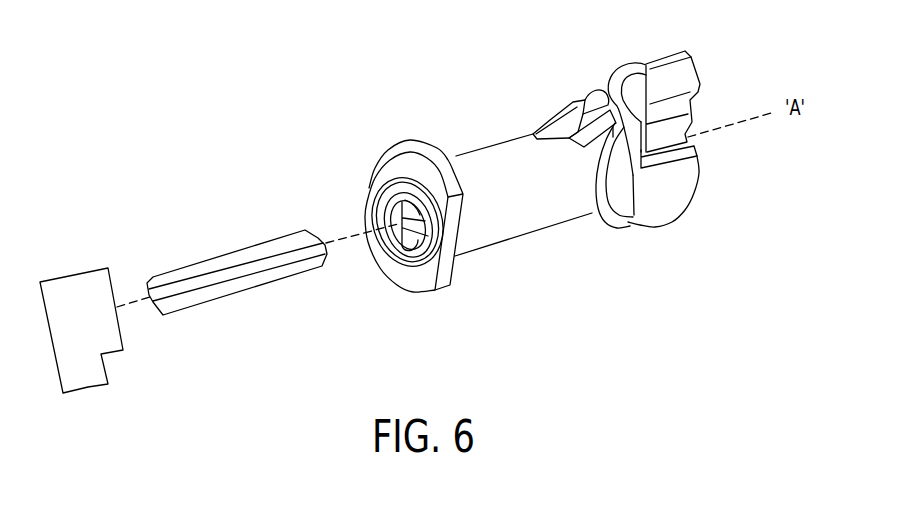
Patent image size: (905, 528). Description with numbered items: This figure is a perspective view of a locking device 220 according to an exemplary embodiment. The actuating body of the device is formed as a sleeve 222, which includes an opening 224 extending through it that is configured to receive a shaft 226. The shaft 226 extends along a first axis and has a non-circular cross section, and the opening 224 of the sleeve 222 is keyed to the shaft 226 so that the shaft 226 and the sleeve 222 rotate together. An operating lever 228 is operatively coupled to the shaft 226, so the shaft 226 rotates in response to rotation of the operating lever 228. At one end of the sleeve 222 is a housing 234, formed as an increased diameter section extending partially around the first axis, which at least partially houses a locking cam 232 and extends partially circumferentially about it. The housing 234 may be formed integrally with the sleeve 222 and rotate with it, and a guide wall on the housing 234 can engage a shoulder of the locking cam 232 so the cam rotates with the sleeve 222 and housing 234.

The locking device 220 is at (417, 91).
The sleeve 222 is at (527, 223).
The opening 224 is at (410, 236).
The shaft 226 is at (245, 287).
The operating lever 228 is at (67, 290).
The locking cam 232 is at (683, 77).
The housing 234 is at (665, 202).